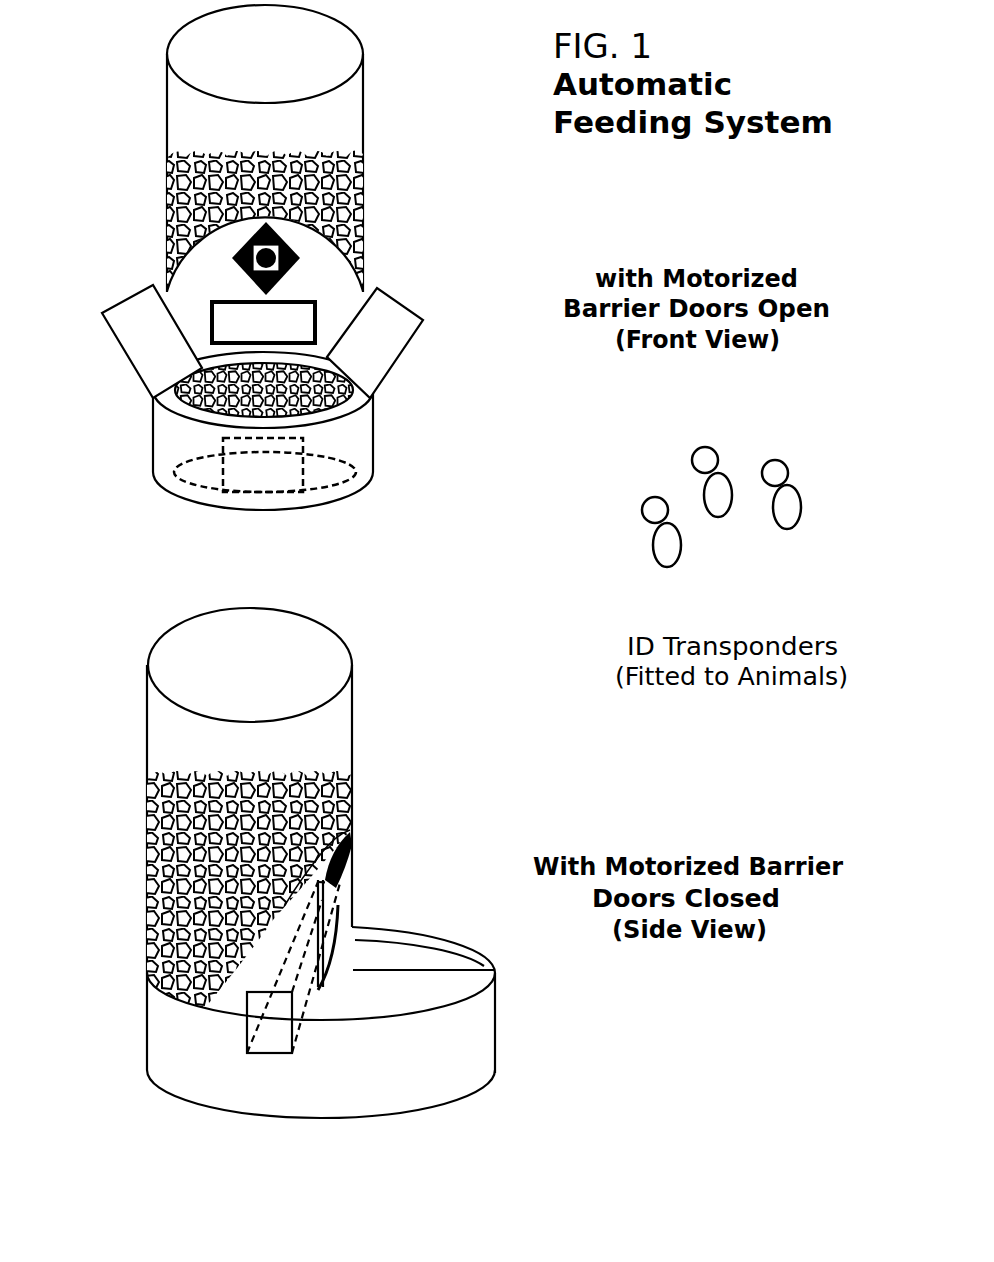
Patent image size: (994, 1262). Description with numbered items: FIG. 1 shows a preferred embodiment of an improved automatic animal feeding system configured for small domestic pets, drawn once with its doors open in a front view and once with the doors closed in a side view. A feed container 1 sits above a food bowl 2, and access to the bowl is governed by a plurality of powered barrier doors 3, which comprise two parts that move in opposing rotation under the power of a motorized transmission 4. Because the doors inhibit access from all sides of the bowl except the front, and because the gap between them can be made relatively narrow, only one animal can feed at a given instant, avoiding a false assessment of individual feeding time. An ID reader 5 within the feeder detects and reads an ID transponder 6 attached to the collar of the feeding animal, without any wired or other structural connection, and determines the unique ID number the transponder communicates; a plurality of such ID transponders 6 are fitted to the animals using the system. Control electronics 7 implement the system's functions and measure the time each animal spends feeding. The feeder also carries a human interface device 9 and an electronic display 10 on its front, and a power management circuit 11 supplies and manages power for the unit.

The feed container 1 is at (175, 752).
The food bowl 2 is at (190, 410).
The powered barrier doors 3 is at (100, 315).
The motorized transmission 4 is at (245, 1056).
The ID reader 5 is at (220, 465).
The ID transponders 6 is at (718, 502).
The control electronics 7 is at (338, 448).
The human interface device 9 is at (237, 252).
The electronic display 10 is at (318, 320).
The power management circuit 11 is at (352, 468).